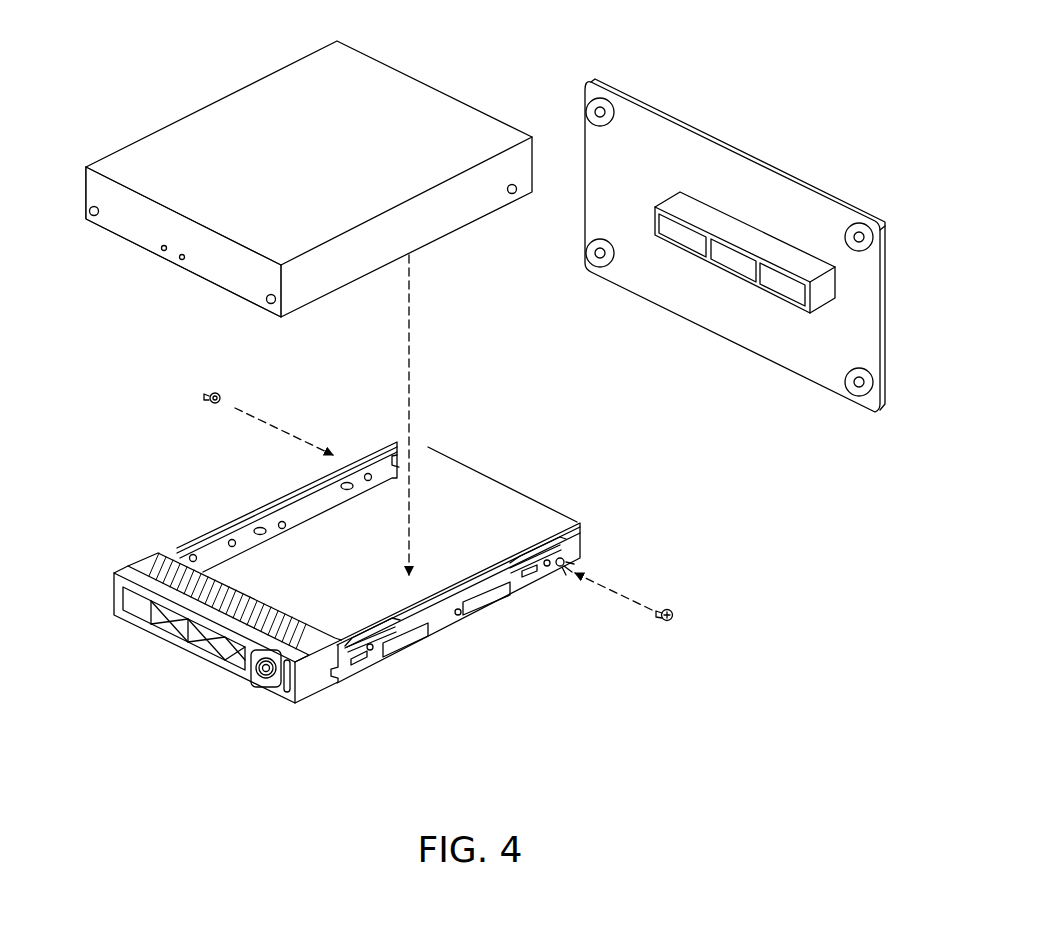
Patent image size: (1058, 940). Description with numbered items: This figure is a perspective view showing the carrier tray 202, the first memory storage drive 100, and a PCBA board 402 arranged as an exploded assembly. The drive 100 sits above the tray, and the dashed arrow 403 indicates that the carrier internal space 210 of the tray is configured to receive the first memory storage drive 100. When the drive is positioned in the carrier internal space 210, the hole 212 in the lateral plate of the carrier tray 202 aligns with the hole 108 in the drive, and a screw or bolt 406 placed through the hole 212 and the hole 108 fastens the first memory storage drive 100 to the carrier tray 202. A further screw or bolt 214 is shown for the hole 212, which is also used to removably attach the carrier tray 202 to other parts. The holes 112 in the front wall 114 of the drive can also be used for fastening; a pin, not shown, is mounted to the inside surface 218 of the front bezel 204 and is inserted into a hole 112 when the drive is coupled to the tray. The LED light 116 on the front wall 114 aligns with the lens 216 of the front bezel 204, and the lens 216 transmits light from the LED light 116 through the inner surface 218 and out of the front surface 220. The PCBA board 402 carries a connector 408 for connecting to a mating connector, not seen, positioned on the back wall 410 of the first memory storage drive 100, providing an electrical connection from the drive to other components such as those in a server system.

The first memory storage drive 100 is at (248, 115).
The hole 108 is at (522, 192).
The holes 112 is at (78, 217).
The front wall 114 is at (128, 213).
The LED light 116 is at (157, 250).
The carrier tray 202 is at (404, 637).
The front bezel 204 is at (150, 578).
The carrier internal space 210 is at (512, 484).
The hole 212 is at (560, 568).
The screw or bolt 214 is at (215, 392).
The lens 216 is at (197, 647).
The inside surface 218 is at (287, 603).
The front surface 220 is at (155, 633).
The PCBA board 402 is at (837, 327).
The dashed arrow 403 is at (405, 344).
The screw or bolt 406 is at (677, 622).
The connector 408 is at (740, 237).
The back wall 410 is at (487, 87).